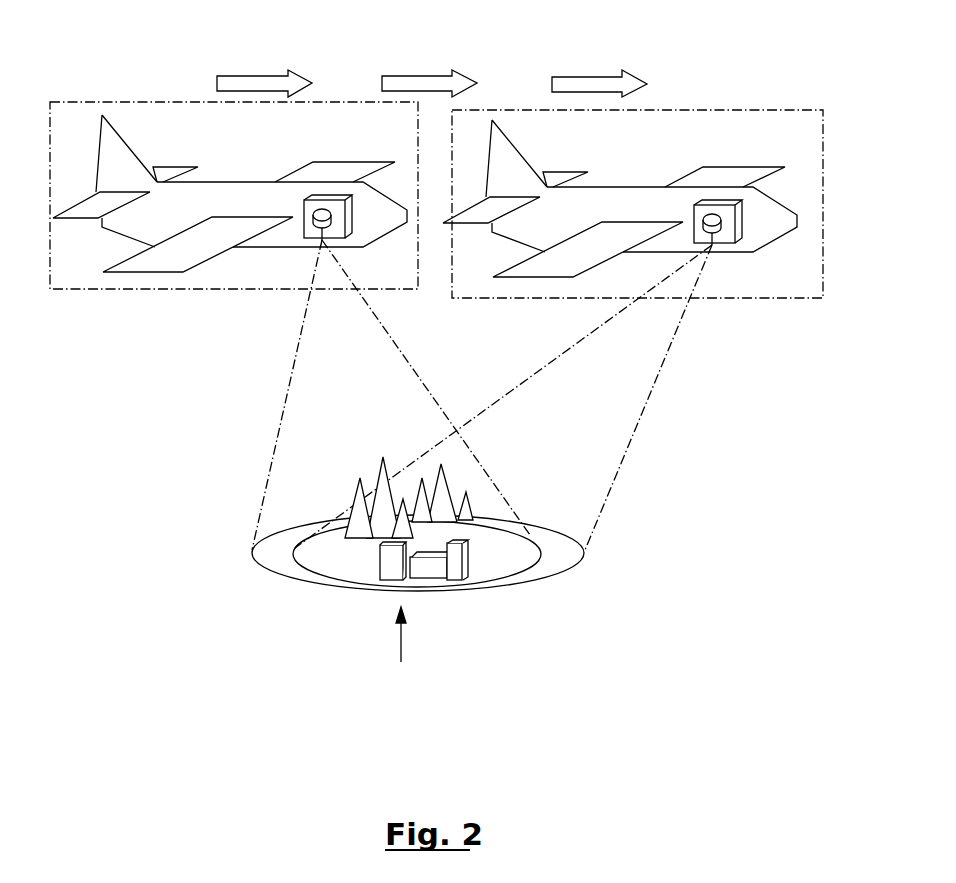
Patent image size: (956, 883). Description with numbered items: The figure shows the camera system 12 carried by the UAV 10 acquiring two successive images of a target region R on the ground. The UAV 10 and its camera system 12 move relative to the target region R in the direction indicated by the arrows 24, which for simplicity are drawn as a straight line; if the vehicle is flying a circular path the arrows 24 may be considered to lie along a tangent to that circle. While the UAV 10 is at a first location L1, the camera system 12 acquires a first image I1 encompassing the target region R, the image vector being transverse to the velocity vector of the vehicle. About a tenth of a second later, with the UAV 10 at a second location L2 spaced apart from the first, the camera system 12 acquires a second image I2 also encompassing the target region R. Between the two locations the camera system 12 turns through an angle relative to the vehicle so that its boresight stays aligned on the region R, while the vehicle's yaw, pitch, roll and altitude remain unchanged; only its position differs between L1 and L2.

The UAV 10 is at (203, 195).
The camera system 12 is at (328, 210).
The arrows 24 is at (248, 76).
The first location L1 is at (188, 292).
The second location L2 is at (757, 300).
The first image I1 is at (282, 557).
The second image I2 is at (563, 565).
The target region R is at (401, 652).